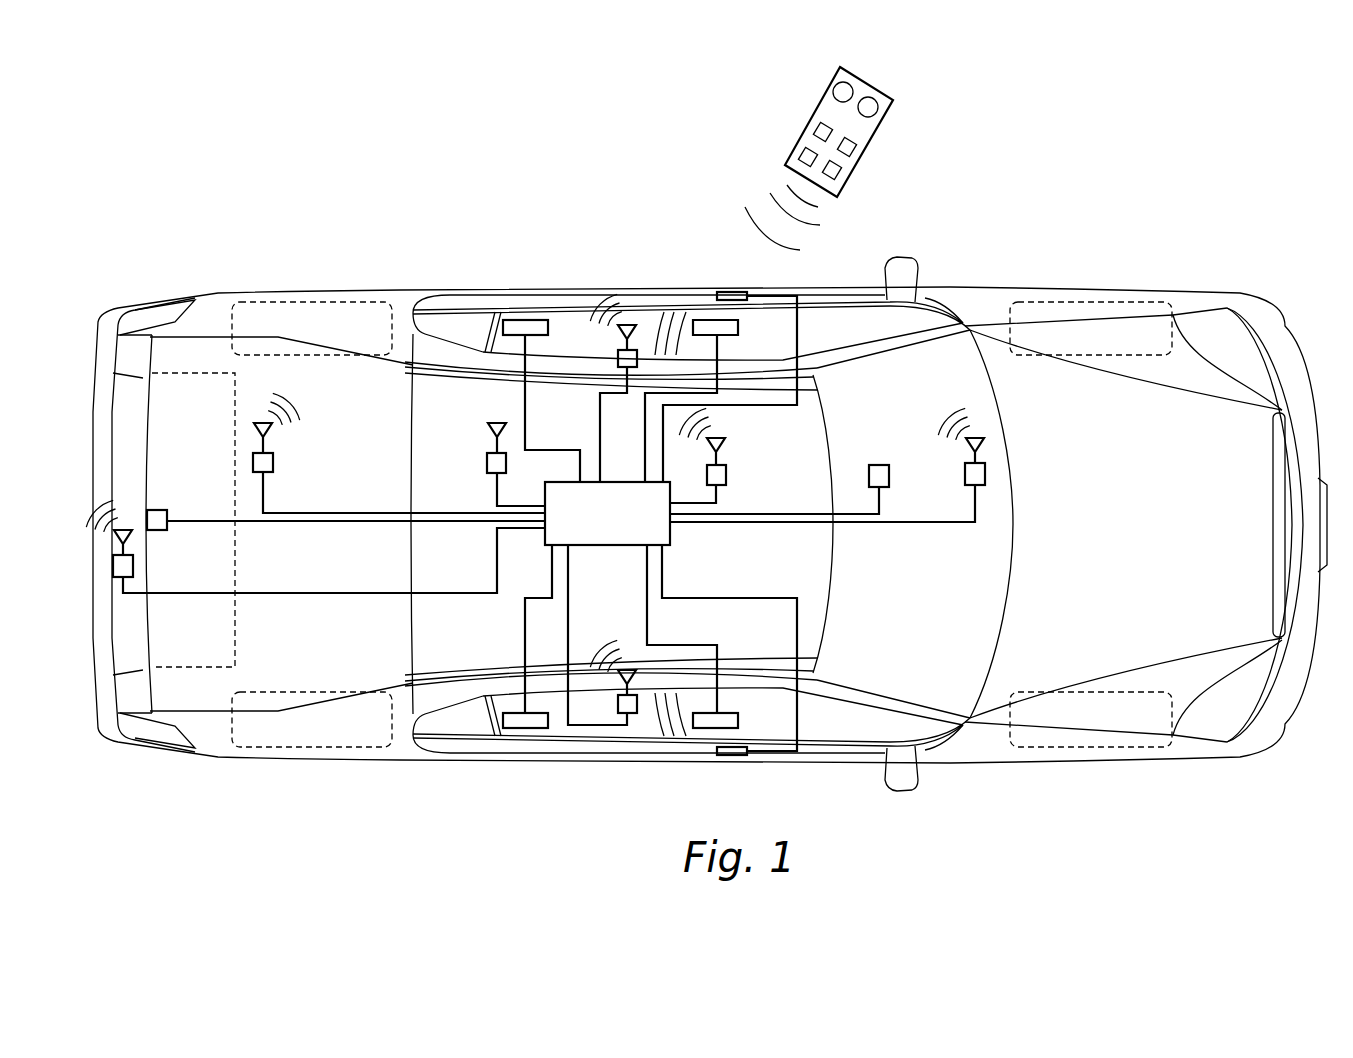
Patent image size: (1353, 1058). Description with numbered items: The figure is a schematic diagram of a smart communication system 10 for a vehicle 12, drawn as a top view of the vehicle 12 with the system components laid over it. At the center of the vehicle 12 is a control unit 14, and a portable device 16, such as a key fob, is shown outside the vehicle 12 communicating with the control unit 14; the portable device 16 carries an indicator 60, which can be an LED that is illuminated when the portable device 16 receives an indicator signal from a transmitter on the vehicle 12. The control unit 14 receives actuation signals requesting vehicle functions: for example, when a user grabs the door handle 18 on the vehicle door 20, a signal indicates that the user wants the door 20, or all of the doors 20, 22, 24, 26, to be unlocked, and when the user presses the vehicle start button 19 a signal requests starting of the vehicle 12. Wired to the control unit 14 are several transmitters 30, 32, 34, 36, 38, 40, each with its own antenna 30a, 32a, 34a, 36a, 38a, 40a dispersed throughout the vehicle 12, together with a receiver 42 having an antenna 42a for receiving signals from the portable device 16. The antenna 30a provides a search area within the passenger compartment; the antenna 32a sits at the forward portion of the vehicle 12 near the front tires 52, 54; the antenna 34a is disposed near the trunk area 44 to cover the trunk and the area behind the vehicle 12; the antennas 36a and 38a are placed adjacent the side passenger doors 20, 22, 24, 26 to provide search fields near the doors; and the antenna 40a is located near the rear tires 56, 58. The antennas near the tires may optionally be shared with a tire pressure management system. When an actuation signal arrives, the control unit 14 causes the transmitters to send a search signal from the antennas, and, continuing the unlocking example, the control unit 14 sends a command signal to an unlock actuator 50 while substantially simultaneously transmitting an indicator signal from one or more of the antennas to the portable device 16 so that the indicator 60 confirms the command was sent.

The smart communication system 10 is at (1000, 207).
The vehicle 12 is at (1213, 293).
The control unit 14 is at (628, 547).
The portable device 16 is at (867, 150).
The door handle 18 is at (733, 757).
The vehicle start button 19 is at (889, 476).
The vehicle door 20 is at (837, 755).
The door 22 is at (848, 298).
The door 24 is at (540, 750).
The door 26 is at (538, 298).
The transmitter 30 is at (725, 473).
The antenna 30a is at (720, 448).
The transmitter 32 is at (986, 470).
The antenna 32a is at (985, 450).
The transmitter 34 is at (133, 567).
The antenna 34a is at (130, 534).
The transmitter 36 is at (618, 362).
The antenna 36a is at (637, 332).
The transmitter 38 is at (640, 710).
The antenna 38a is at (645, 673).
The transmitter 40 is at (273, 462).
The antenna 40a is at (270, 433).
The receiver 42 is at (490, 463).
The antenna 42a is at (490, 436).
The trunk area 44 is at (193, 672).
The unlock actuator 50 is at (742, 718).
The front tire 52 is at (1088, 747).
The front tire 54 is at (1083, 302).
The rear tire 56 is at (288, 747).
The rear tire 58 is at (332, 302).
The indicator 60 is at (840, 90).